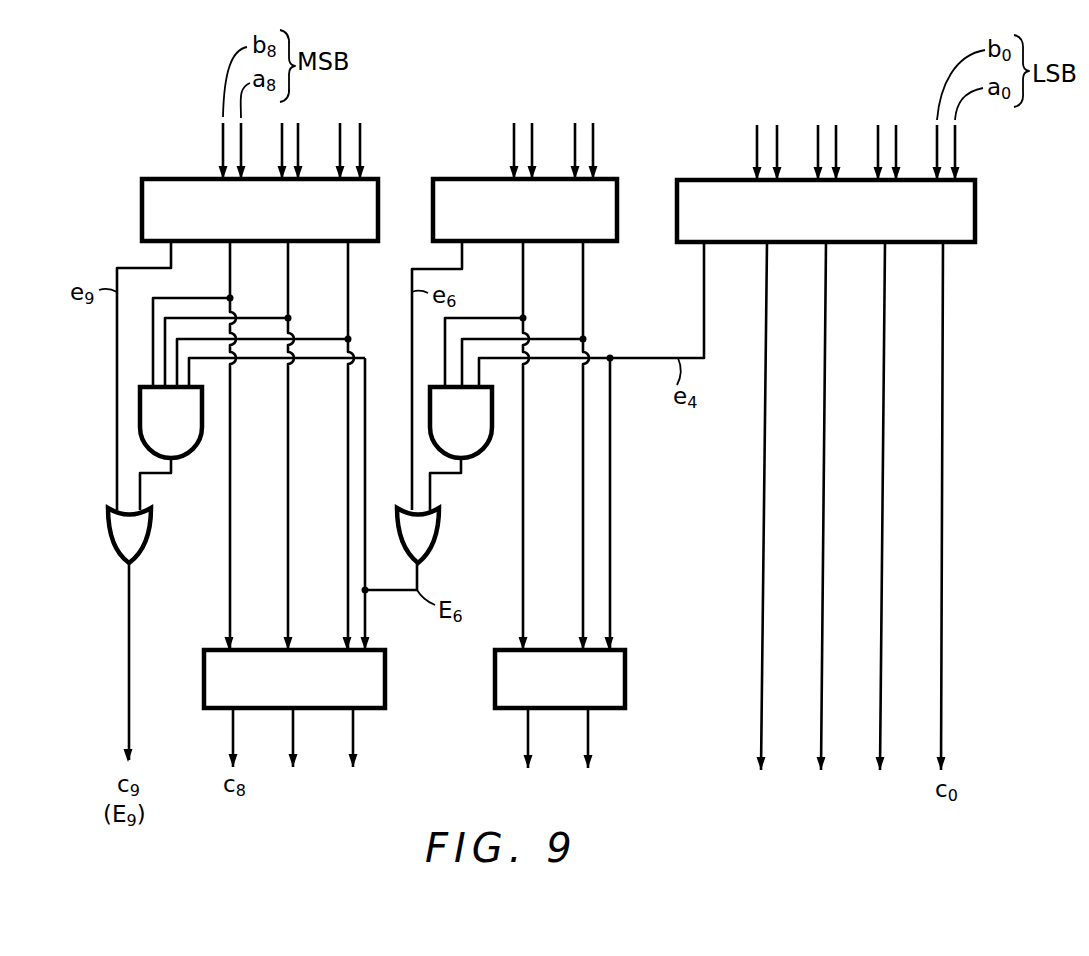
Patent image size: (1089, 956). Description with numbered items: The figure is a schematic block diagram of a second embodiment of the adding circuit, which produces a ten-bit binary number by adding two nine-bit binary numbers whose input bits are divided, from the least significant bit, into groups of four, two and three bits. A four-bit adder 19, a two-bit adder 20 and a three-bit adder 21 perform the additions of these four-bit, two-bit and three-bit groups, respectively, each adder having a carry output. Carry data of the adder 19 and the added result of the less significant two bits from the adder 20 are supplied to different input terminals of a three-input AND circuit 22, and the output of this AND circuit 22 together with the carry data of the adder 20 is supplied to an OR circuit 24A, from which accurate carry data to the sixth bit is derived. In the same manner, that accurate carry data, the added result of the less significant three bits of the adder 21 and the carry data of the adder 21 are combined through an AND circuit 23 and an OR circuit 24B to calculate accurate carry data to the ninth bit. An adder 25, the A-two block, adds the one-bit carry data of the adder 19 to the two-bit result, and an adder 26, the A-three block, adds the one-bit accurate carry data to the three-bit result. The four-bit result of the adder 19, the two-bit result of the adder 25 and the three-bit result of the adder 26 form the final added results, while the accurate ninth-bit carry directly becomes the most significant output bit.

The 4-bit adder 19 is at (975, 203).
The 2-bit adder 20 is at (617, 205).
The 3-bit adder 21 is at (378, 205).
The 3-input AND circuit 22 is at (486, 456).
The AND circuit 23 is at (196, 456).
The OR circuit 24A is at (439, 540).
The OR circuit 24B is at (151, 540).
The adder (A2 block) 25 is at (625, 664).
The adder (A3 block) 26 is at (385, 664).